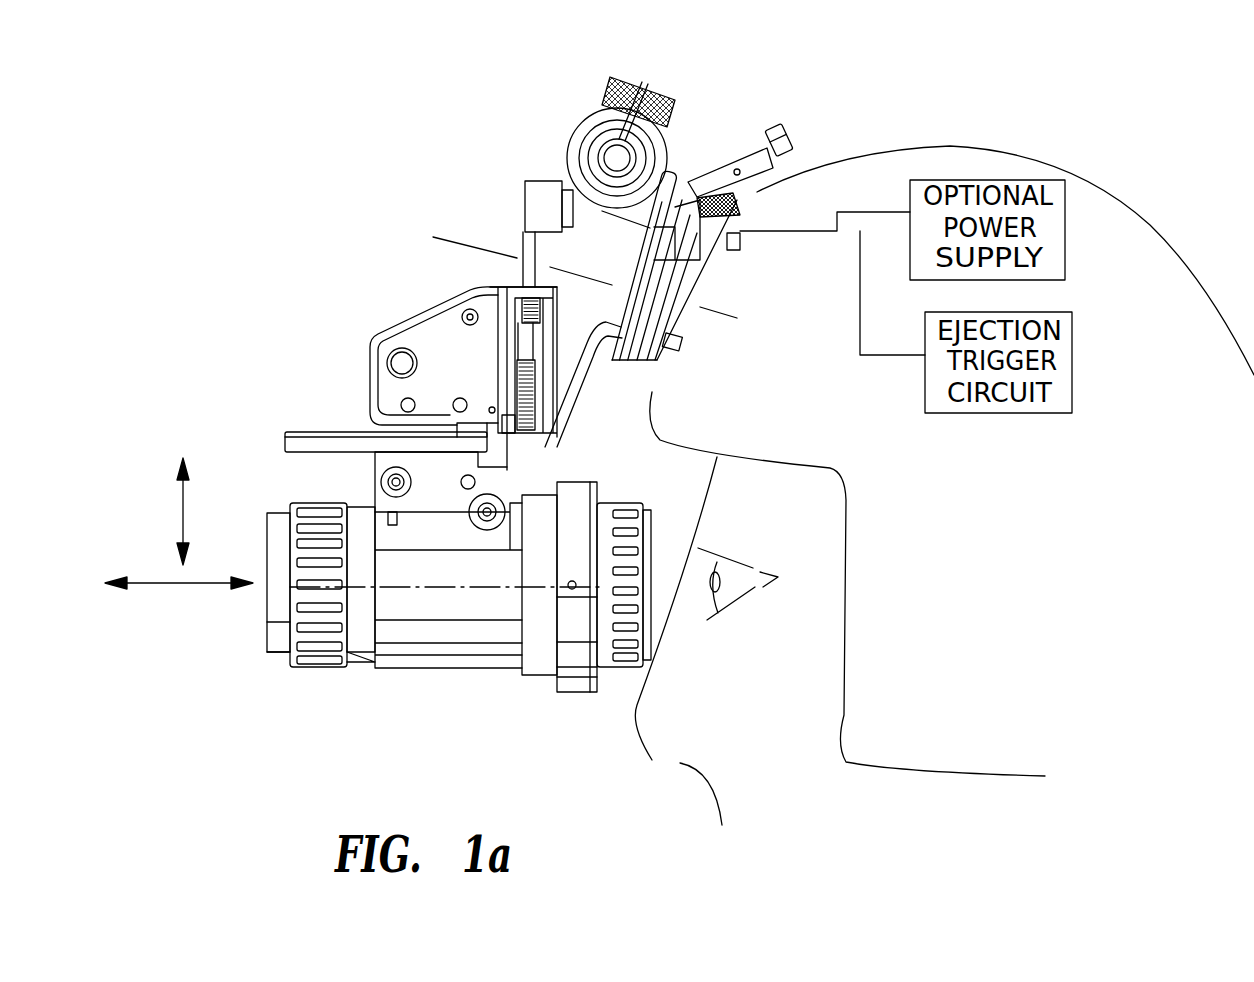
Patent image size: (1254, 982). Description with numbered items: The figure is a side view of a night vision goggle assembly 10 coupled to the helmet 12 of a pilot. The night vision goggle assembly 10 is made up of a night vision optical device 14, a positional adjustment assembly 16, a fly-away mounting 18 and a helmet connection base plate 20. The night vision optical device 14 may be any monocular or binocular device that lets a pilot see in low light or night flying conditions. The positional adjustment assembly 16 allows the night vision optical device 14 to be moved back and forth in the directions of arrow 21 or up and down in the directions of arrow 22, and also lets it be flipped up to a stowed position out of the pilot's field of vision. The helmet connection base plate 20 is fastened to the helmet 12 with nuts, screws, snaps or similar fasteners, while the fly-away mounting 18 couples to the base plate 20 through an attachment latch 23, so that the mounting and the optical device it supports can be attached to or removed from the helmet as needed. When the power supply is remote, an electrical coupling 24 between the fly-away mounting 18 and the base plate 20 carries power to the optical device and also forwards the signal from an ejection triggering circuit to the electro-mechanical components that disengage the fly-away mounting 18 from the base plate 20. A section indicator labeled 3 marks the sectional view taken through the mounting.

The night vision goggle assembly 10 is at (328, 152).
The helmet 12 is at (1094, 157).
The night vision optical device 14 is at (412, 688).
The positional adjustment assembly 16 is at (350, 325).
The fly-away mounting 18 is at (524, 158).
The helmet connection base plate 20 is at (632, 384).
The arrow 21 is at (185, 592).
The arrow 22 is at (183, 505).
The attachment latch 23 is at (785, 127).
The electrical coupling 24 is at (683, 215).
The section line for FIG. 3 is at (433, 237).